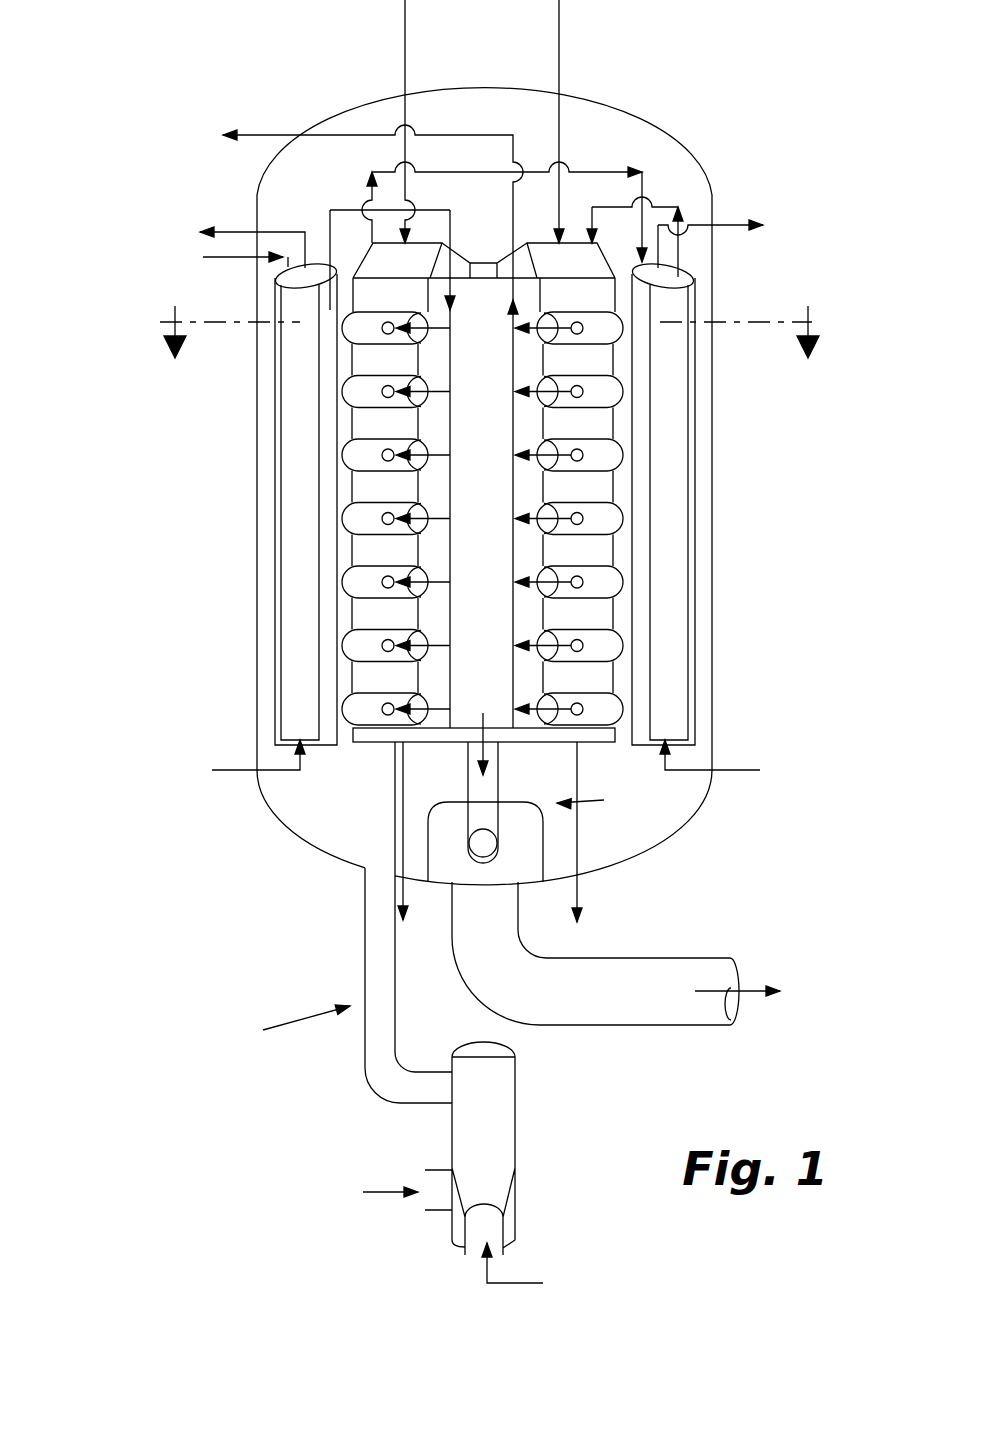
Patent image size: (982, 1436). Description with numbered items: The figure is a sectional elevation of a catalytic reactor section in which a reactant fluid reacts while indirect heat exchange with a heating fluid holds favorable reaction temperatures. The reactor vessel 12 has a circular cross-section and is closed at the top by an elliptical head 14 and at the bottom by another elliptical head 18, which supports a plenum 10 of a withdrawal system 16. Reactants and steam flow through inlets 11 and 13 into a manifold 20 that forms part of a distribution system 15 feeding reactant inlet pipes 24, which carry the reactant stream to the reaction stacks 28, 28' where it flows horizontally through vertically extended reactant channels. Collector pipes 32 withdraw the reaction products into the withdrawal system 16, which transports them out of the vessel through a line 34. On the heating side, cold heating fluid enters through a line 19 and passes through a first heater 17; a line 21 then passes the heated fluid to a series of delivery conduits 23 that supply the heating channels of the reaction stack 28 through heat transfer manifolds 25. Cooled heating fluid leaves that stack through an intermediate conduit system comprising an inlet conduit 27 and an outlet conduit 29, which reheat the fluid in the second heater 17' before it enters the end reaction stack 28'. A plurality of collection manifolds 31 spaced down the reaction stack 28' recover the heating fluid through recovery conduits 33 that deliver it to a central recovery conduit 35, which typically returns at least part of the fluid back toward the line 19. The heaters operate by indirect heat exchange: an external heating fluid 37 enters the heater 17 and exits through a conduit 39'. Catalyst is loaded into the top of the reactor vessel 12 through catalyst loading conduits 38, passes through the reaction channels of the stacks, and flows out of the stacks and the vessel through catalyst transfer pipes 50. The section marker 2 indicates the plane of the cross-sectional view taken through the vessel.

The plenum 10 is at (534, 812).
The inlet 11 is at (383, 1191).
The reactor vessel 12 is at (712, 517).
The inlet 13 is at (543, 1283).
The elliptical head 14 is at (622, 104).
The distribution system 15 is at (289, 1025).
The withdrawal system 16 is at (598, 800).
The heater 17 is at (264, 502).
The heater 17' is at (716, 502).
The elliptical head 18 is at (674, 834).
The line 19 is at (233, 258).
The manifold 20 is at (518, 1114).
The line 21 is at (328, 228).
The delivery conduits 23 is at (440, 326).
The reactant inlet pipes 24 is at (375, 926).
The heat transfer manifolds 25 is at (342, 338).
The inlet conduit 27 is at (586, 170).
The reaction stack 28 is at (460, 770).
The reaction stack 28' is at (628, 226).
The outlet conduit 29 is at (672, 204).
The collection manifolds 31 is at (607, 452).
The collector pipes 32 is at (467, 766).
The recovery conduits 33 is at (522, 334).
The line 34 is at (613, 1026).
The central recovery conduit 35 is at (283, 134).
The heating fluid 37 is at (230, 770).
The catalyst loading conduits 38 is at (405, 18).
The conduit 39' is at (250, 228).
The catalyst transfer pipes 50 is at (408, 898).
The section line 2 is at (491, 323).